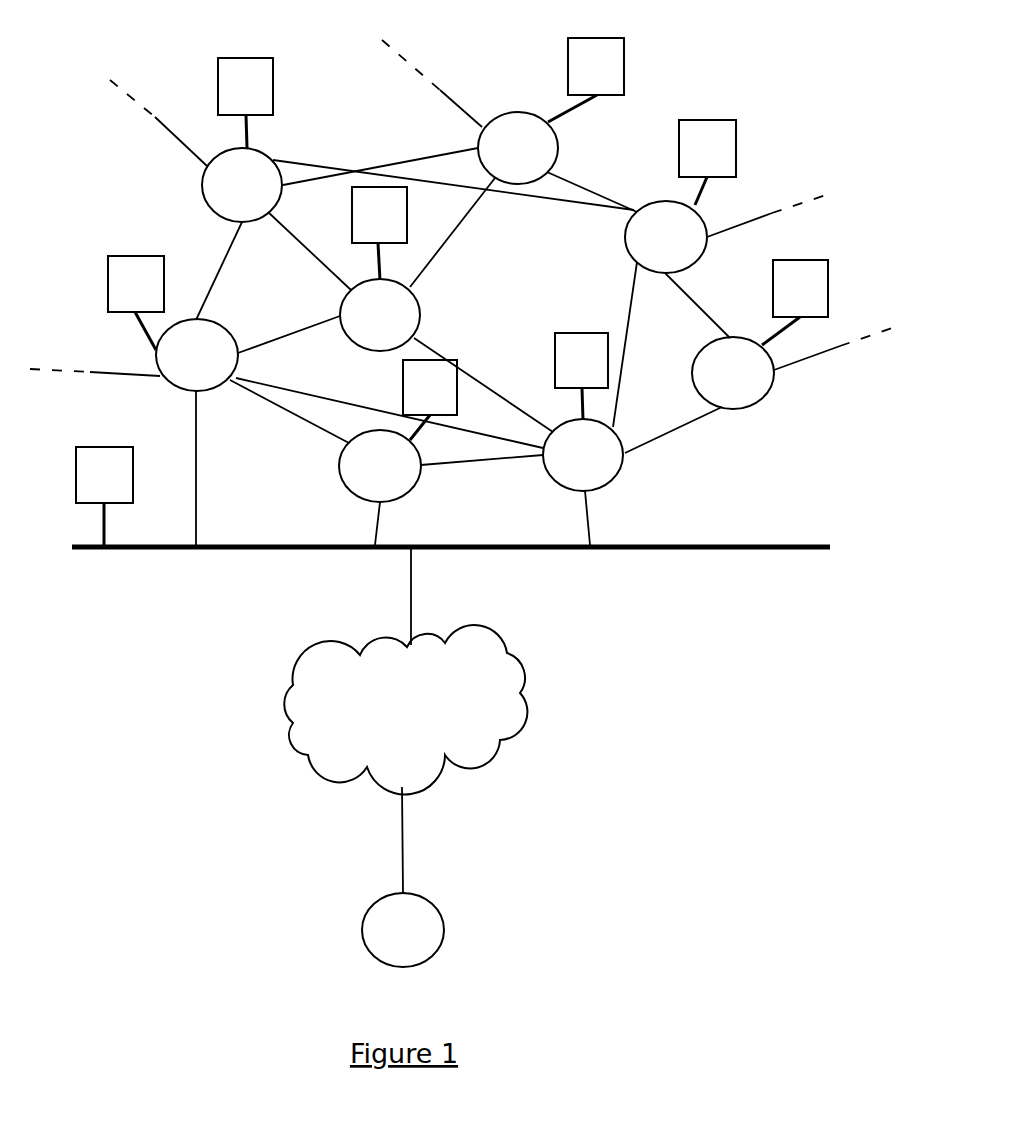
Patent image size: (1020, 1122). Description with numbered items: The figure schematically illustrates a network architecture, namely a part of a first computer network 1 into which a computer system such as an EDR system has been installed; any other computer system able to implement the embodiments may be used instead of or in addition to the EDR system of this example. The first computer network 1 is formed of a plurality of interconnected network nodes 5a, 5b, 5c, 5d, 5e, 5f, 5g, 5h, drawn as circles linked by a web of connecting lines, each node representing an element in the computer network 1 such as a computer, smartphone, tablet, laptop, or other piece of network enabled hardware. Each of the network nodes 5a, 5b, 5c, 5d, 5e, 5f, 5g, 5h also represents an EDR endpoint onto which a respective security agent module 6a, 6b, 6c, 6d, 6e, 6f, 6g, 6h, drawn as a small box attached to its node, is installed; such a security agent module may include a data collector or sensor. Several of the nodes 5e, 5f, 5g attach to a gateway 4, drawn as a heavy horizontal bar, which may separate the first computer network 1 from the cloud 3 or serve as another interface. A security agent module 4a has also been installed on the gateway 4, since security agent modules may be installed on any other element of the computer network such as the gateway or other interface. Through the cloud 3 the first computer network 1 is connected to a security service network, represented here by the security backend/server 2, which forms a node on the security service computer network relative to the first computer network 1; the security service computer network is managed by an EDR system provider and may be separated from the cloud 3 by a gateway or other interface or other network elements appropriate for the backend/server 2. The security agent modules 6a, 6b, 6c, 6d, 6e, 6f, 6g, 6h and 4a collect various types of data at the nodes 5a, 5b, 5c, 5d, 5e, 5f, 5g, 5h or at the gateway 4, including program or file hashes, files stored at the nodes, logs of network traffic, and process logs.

The first computer network 1 is at (675, 42).
The security backend/server 2 is at (403, 930).
The cloud 3 is at (405, 709).
The gateway 4 is at (760, 541).
The security agent module 4a is at (104, 496).
The network node 5a is at (242, 185).
The network node 5b is at (518, 148).
The network node 5c is at (666, 237).
The network node 5d is at (733, 373).
The network node 5e is at (583, 455).
The network node 5f is at (380, 466).
The network node 5g is at (197, 355).
The network node 5h is at (380, 315).
The security agent module 6a is at (245, 103).
The security agent module 6b is at (586, 80).
The security agent module 6c is at (707, 162).
The security agent module 6d is at (795, 302).
The security agent module 6e is at (581, 376).
The security agent module 6f is at (430, 400).
The security agent module 6g is at (136, 303).
The security agent module 6h is at (379, 233).